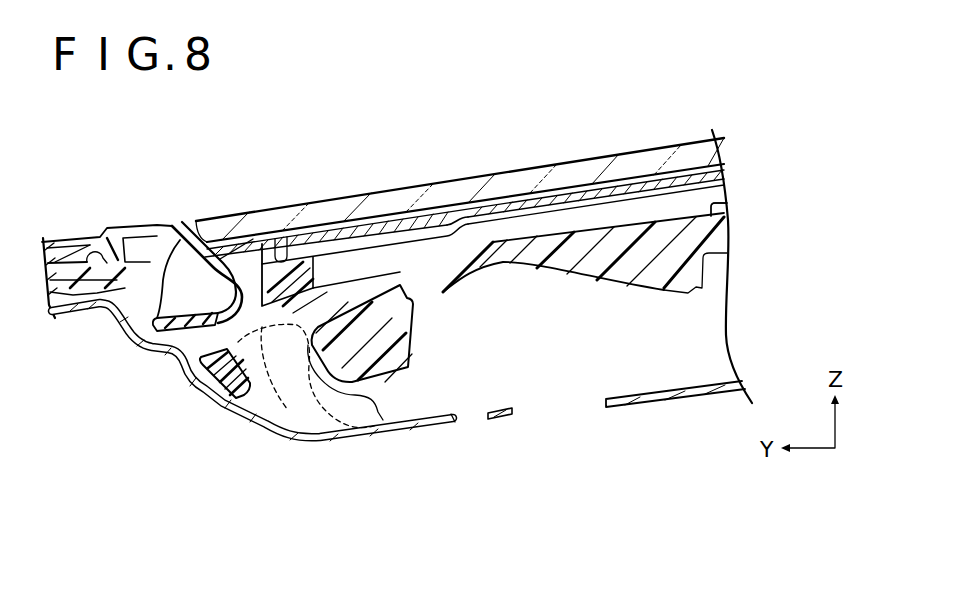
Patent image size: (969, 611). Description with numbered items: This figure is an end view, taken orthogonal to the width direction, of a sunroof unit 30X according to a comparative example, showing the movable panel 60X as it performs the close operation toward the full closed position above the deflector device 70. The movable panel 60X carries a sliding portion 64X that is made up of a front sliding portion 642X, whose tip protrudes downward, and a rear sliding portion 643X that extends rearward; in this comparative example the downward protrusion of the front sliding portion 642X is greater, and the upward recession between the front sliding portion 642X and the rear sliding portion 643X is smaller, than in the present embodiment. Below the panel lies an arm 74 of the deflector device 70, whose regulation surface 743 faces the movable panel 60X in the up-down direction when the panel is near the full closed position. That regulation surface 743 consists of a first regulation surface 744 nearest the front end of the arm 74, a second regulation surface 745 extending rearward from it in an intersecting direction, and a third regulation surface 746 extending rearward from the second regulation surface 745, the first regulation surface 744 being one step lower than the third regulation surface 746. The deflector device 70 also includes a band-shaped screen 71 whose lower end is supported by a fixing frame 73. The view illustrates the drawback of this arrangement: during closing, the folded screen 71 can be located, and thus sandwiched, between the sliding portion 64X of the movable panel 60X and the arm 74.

The sunroof unit 30X is at (75, 186).
The movable panel 60X is at (469, 175).
The third regulation surface 746 is at (728, 203).
The regulation surface 743 is at (787, 203).
The second regulation surface 745 is at (456, 262).
The sliding portion 64X is at (226, 290).
The rear sliding portion 643X is at (413, 282).
The first regulation surface 744 is at (410, 314).
The front sliding portion 642X is at (251, 371).
The fixing frame 73 is at (190, 374).
The screen 71 is at (378, 416).
The arm 74 is at (672, 294).
The deflector device 70 is at (569, 361).